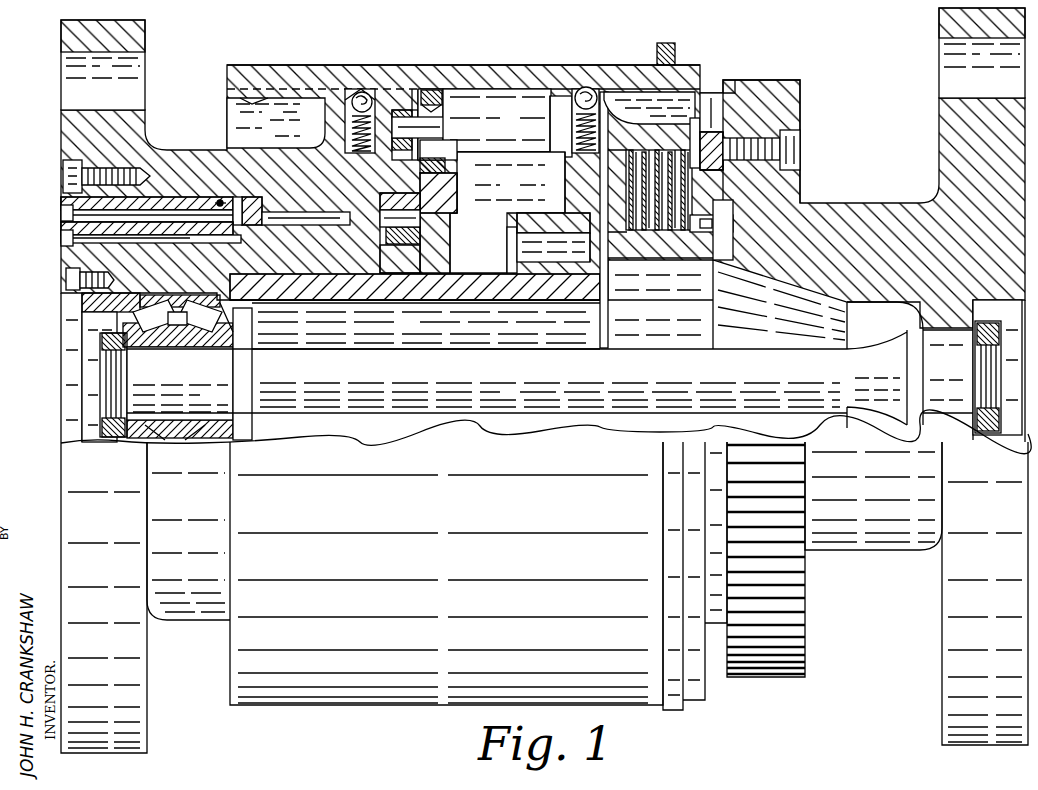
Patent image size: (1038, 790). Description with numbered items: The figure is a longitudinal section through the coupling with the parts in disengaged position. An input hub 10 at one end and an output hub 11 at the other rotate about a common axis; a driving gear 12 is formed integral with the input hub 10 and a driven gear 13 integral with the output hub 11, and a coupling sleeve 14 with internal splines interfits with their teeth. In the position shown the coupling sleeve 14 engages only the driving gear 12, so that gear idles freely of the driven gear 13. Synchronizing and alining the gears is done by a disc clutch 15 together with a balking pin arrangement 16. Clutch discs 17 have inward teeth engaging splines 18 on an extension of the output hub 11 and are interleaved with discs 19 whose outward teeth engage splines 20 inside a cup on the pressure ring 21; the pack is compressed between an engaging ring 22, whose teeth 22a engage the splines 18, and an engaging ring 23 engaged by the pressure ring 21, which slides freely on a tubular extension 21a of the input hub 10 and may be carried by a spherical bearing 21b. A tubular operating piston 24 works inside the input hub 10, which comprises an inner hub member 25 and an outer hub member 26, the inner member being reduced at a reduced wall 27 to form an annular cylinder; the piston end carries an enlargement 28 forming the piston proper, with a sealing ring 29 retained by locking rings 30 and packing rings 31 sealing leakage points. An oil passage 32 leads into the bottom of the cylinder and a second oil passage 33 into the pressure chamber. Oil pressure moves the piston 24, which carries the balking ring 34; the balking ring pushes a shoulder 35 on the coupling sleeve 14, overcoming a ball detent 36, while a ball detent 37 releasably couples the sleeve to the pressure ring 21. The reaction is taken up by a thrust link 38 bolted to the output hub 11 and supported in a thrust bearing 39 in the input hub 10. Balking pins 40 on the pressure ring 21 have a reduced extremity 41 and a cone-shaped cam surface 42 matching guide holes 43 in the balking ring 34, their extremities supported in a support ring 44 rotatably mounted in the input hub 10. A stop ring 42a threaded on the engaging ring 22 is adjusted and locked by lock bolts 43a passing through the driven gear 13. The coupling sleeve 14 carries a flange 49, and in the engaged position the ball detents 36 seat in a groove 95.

The input hub 10 is at (48, 137).
The output hub 11 is at (950, 163).
The driving gear 12 is at (332, 112).
The driven gear 13 is at (796, 114).
The coupling sleeve 14 is at (291, 72).
The disc clutch 15 is at (637, 270).
The balking pin arrangement 16 is at (493, 177).
The clutch discs 17 is at (648, 232).
The splines 18 is at (696, 226).
The discs 19 is at (680, 150).
The splines 20 is at (712, 135).
The pressure ring 21 is at (508, 228).
The tubular extension 21a is at (478, 296).
The spherical bearing 21b is at (540, 262).
The engaging ring 22 is at (712, 186).
The teeth 22a is at (735, 225).
The engaging ring 23 is at (660, 190).
The tubular operating piston 24 is at (450, 214).
The inner hub member 25 is at (75, 270).
The outer hub member 26 is at (72, 150).
The reduced wall 27 is at (345, 295).
The enlargement 28 is at (250, 200).
The sealing ring 29 is at (415, 258).
The locking rings 30 is at (420, 240).
The packing rings 31 is at (220, 200).
The oil passage 32 is at (105, 220).
The second oil passage 33 is at (118, 243).
The balking ring 34 is at (445, 195).
The shoulder 35 is at (432, 90).
The ball detent 36 is at (362, 90).
The ball detent 37 is at (586, 87).
The thrust link 38 is at (430, 355).
The thrust bearing 39 is at (252, 338).
The balking pins 40 is at (530, 143).
The reduced extremity 41 is at (425, 126).
The cone-shaped cam surface 42 is at (445, 150).
The stop ring 42a is at (725, 132).
The guide holes 43 is at (443, 168).
The lock bolts 43a is at (796, 148).
The support ring 44 is at (400, 112).
The flange 49 is at (675, 46).
The groove 95 is at (258, 112).